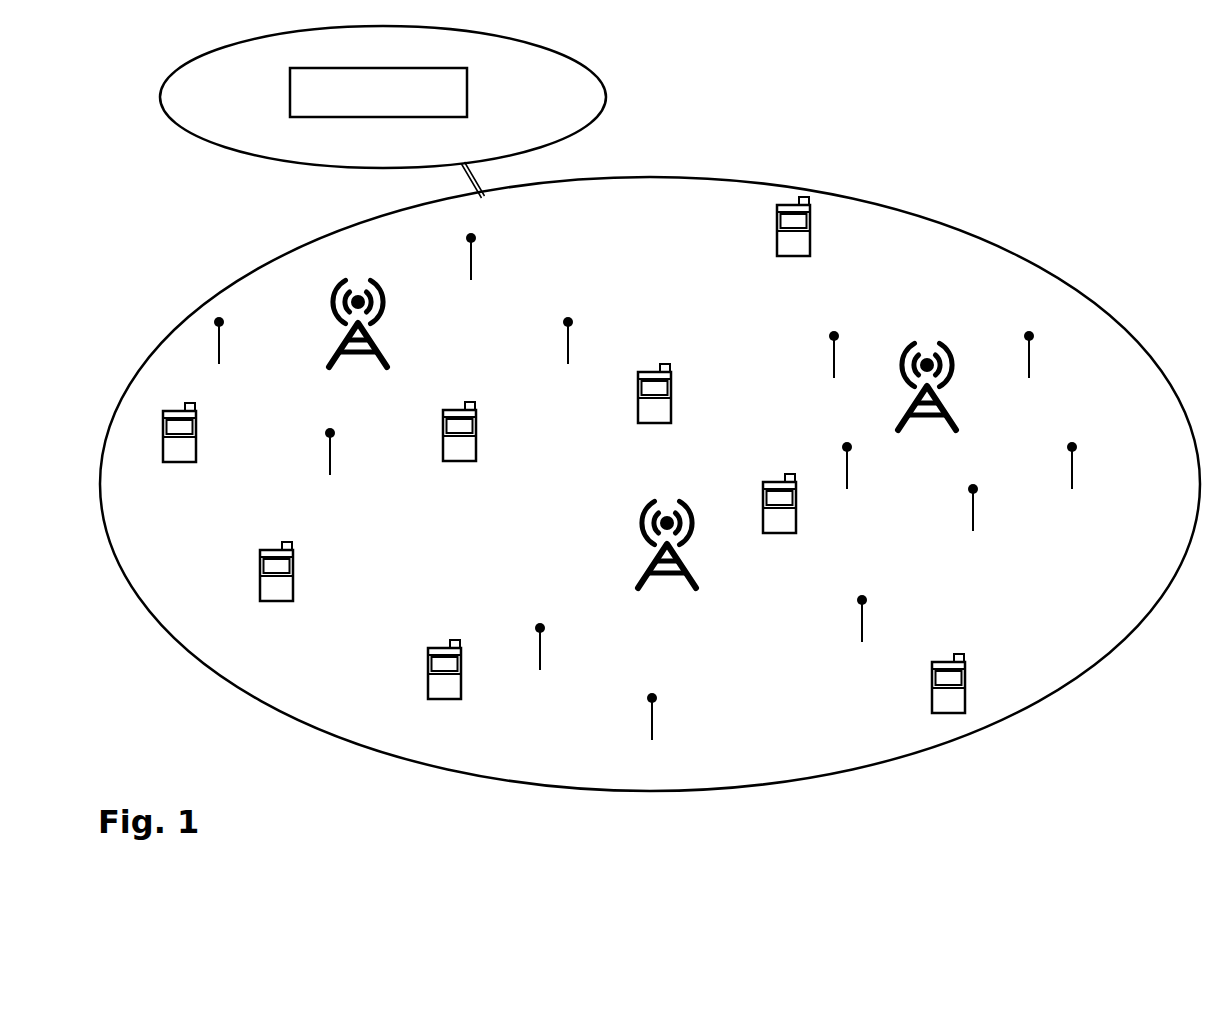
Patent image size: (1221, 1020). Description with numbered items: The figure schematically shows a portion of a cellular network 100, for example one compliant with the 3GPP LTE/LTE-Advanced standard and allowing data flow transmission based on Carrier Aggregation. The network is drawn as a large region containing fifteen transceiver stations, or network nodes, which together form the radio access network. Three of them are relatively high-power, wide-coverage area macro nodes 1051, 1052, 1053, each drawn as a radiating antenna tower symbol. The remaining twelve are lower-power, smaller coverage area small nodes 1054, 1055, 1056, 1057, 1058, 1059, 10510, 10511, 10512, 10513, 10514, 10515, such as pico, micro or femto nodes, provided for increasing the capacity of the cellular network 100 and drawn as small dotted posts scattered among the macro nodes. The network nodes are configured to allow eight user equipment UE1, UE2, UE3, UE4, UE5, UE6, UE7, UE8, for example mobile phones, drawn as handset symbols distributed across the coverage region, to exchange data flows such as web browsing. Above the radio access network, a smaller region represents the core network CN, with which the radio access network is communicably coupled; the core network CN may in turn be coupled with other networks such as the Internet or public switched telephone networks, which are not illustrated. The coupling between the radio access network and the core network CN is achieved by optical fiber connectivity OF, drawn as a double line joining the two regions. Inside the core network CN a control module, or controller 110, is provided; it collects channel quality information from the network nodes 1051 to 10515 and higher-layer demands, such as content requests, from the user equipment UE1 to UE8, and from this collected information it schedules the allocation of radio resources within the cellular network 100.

The cellular network 100 is at (1121, 100).
The core network CN is at (600, 92).
The control module 110 is at (467, 92).
The optical fiber connectivity OF is at (464, 167).
The macro node 1051 is at (385, 310).
The macro node 1052 is at (638, 522).
The macro node 1053 is at (945, 345).
The small node 1054 is at (222, 317).
The small node 1055 is at (327, 429).
The small node 1056 is at (474, 233).
The small node 1057 is at (571, 317).
The small node 1058 is at (538, 624).
The small node 1059 is at (655, 693).
The small node 10510 is at (865, 595).
The small node 10511 is at (845, 443).
The small node 10512 is at (976, 494).
The small node 10513 is at (1075, 442).
The small node 10514 is at (1028, 332).
The small node 10515 is at (832, 332).
The user equipment UE1 is at (195, 446).
The user equipment UE2 is at (262, 552).
The user equipment UE3 is at (430, 648).
The user equipment UE4 is at (476, 432).
The user equipment UE5 is at (672, 392).
The user equipment UE6 is at (825, 207).
The user equipment UE7 is at (797, 505).
The user equipment UE8 is at (965, 683).